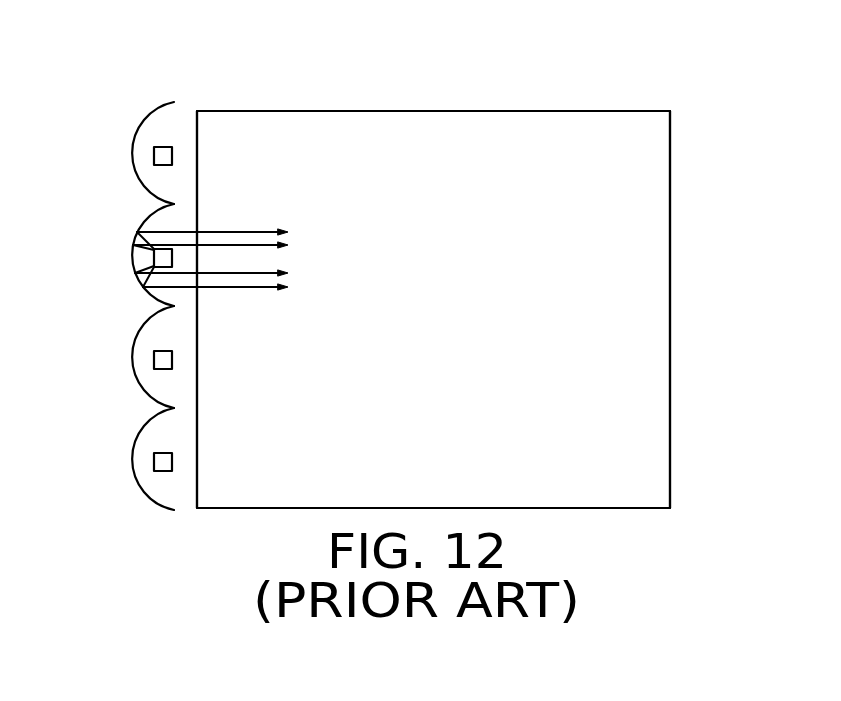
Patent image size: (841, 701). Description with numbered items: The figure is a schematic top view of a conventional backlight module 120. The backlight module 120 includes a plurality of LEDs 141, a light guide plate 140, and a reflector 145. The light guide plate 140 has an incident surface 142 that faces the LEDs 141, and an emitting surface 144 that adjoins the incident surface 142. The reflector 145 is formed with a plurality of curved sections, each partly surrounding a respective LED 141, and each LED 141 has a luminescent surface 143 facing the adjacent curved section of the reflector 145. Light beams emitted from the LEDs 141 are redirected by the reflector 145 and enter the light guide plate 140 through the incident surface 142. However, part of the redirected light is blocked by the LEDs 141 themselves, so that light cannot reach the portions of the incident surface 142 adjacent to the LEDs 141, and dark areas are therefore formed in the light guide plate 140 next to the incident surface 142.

The backlight module 120 is at (352, 62).
The light guide plate 140 is at (423, 101).
The LED 141 is at (167, 147).
The incident surface 142 is at (197, 111).
The luminescent surface 143 is at (155, 158).
The emitting surface 144 is at (638, 312).
The reflector 145 is at (176, 103).